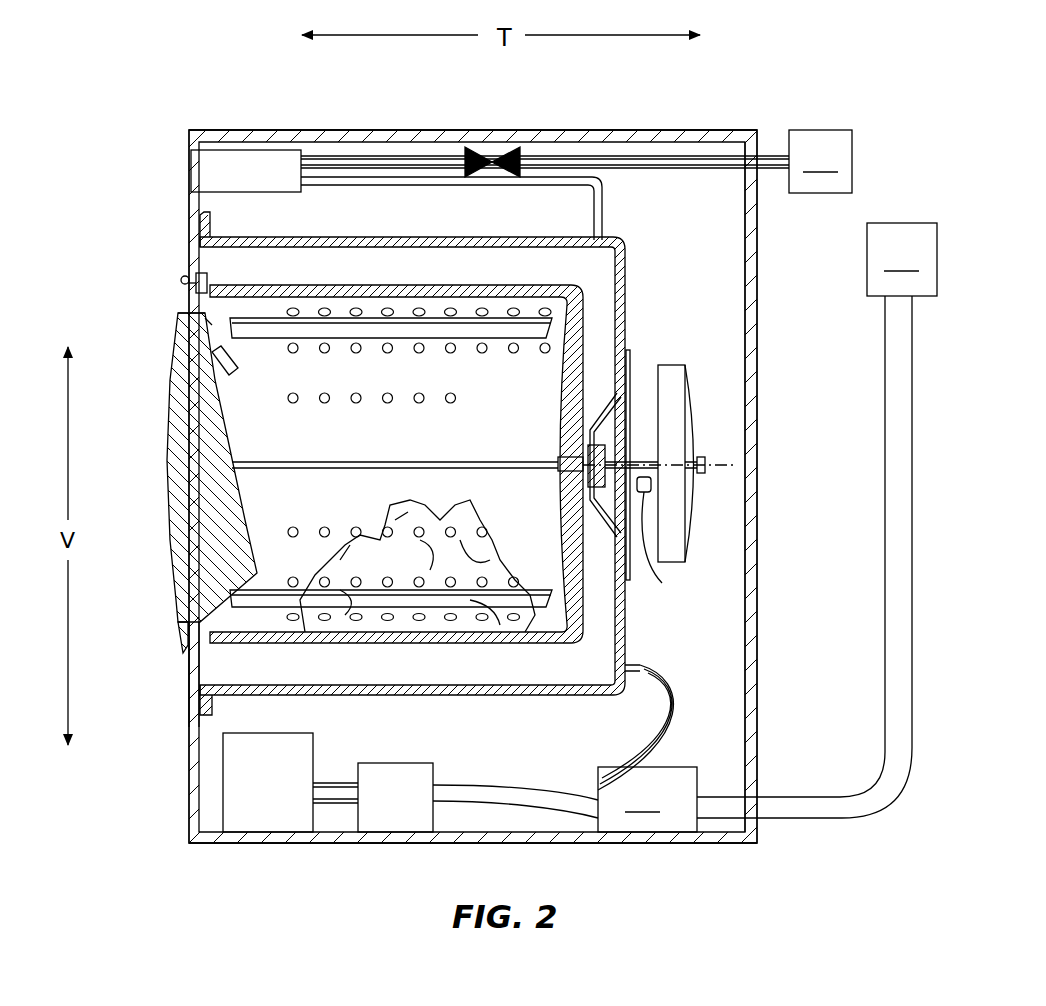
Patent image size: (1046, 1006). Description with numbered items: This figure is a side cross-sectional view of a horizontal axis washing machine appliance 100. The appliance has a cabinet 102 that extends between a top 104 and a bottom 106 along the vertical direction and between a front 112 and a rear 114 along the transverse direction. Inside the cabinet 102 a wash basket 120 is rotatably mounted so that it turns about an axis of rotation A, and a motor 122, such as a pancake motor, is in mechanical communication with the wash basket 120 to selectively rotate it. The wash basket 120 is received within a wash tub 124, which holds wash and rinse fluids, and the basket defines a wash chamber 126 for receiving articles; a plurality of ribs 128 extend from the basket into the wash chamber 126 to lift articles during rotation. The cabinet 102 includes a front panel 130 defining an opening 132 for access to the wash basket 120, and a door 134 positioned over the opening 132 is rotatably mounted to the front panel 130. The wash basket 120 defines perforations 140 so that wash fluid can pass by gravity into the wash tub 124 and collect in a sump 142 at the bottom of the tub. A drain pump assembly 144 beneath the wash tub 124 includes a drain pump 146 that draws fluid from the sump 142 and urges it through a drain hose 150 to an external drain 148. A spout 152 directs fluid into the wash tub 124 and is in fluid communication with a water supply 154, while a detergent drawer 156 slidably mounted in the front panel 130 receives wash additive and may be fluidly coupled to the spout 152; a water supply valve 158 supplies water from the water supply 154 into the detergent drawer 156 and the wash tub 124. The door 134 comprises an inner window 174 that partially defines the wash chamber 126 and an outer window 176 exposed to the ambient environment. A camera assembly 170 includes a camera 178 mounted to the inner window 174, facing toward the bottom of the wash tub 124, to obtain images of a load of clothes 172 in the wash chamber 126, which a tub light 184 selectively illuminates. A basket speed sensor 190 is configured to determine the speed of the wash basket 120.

The washing machine appliance 100 is at (218, 70).
The cabinet 102 is at (757, 473).
The top 104 is at (766, 132).
The bottom 106 is at (783, 834).
The front 112 is at (181, 130).
The rear 114 is at (758, 290).
The wash basket 120 is at (392, 286).
The motor 122 is at (675, 405).
The wash tub 124 is at (626, 302).
The wash chamber 126 is at (256, 420).
The ribs 128 is at (330, 462).
The front panel 130 is at (193, 668).
The opening 132 is at (219, 323).
The door 134 is at (180, 512).
The perforations 140 is at (452, 403).
The sump 142 is at (586, 653).
The drain pump assembly 144 is at (718, 718).
The drain pump 146 is at (647, 799).
The external drain 148 is at (902, 259).
The drain hose 150 is at (887, 602).
The spout 152 is at (603, 208).
The water supply 154 is at (820, 161).
The detergent drawer 156 is at (262, 168).
The water supply valve 158 is at (492, 146).
The camera assembly 170 is at (201, 358).
The load of clothes 172 is at (417, 602).
The inner window 174 is at (262, 525).
The outer window 176 is at (174, 545).
The camera 178 is at (233, 352).
The tub light 184 is at (192, 283).
The basket speed sensor 190 is at (662, 583).
The axis of rotation A is at (725, 458).